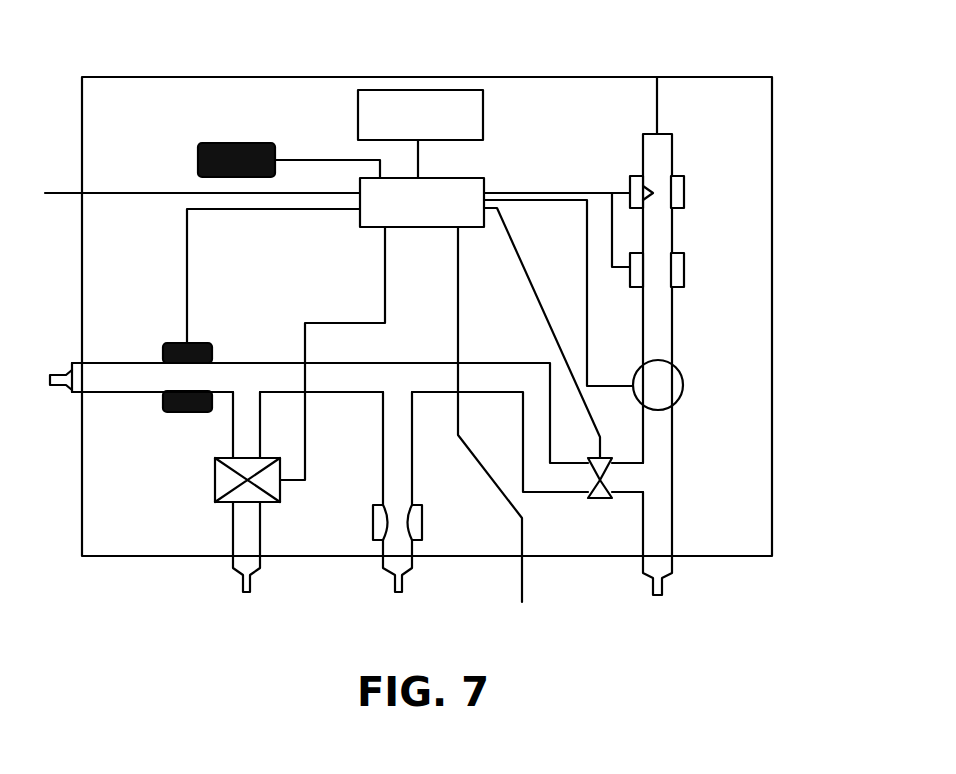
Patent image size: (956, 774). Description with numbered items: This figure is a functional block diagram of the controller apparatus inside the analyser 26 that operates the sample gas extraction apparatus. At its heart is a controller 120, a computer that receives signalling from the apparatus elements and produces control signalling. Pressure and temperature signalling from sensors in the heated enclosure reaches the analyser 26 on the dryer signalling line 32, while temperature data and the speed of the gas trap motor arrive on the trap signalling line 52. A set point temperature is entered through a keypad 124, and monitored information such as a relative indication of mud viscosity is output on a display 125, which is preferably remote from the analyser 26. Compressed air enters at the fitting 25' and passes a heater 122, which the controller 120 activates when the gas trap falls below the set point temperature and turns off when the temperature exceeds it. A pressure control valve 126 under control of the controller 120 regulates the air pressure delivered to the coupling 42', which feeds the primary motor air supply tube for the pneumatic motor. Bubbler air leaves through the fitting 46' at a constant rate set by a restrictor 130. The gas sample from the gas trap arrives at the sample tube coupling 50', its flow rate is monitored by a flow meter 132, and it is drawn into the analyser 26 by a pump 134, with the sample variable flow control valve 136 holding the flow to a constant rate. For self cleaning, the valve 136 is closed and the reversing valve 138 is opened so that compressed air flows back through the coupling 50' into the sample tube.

The analyser 26 is at (772, 481).
The dryer signalling line 32 is at (65, 192).
The display 125 is at (402, 90).
The controller 120 is at (451, 178).
The keypad 124 is at (233, 143).
The heater 122 is at (163, 400).
The fitting 25' is at (296, 427).
The pressure control valve 126 is at (215, 483).
The coupling 42' is at (211, 513).
The fitting 46' is at (362, 513).
The restrictor 130 is at (373, 522).
The trap signalling line 52 is at (524, 590).
The pump 134 is at (683, 372).
The sample tube coupling 50' is at (696, 386).
The sample variable flow control valve 136 is at (684, 190).
The flow meter 132 is at (684, 266).
The reversing valve 138 is at (600, 498).